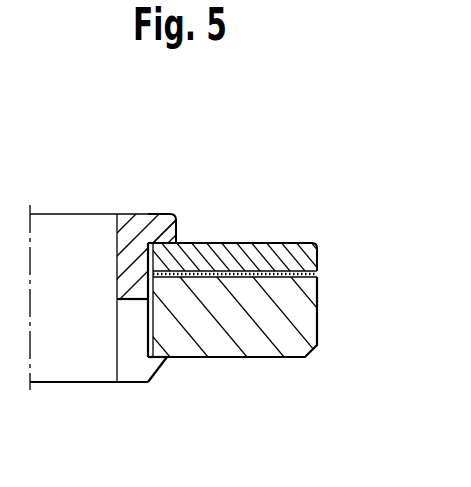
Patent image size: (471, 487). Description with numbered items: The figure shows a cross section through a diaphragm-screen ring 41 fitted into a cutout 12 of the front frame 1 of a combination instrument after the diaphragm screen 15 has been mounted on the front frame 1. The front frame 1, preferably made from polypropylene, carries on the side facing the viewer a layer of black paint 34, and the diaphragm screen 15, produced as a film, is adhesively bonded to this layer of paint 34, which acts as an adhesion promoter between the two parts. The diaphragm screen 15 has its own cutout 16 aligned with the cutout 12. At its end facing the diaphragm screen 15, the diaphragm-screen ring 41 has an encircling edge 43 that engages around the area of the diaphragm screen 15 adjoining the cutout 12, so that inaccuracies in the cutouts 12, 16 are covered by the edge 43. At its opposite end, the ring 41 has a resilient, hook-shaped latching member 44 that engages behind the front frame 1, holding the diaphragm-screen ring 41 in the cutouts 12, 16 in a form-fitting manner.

The front frame 1 is at (287, 333).
The cutout 12 is at (147, 322).
The diaphragm screen 15 is at (255, 255).
The cutout 16 is at (148, 240).
The layer of black paint 34 is at (313, 273).
The diaphragm-screen ring 41 is at (132, 283).
The encircling edge 43 is at (162, 233).
The latching member 44 is at (150, 362).